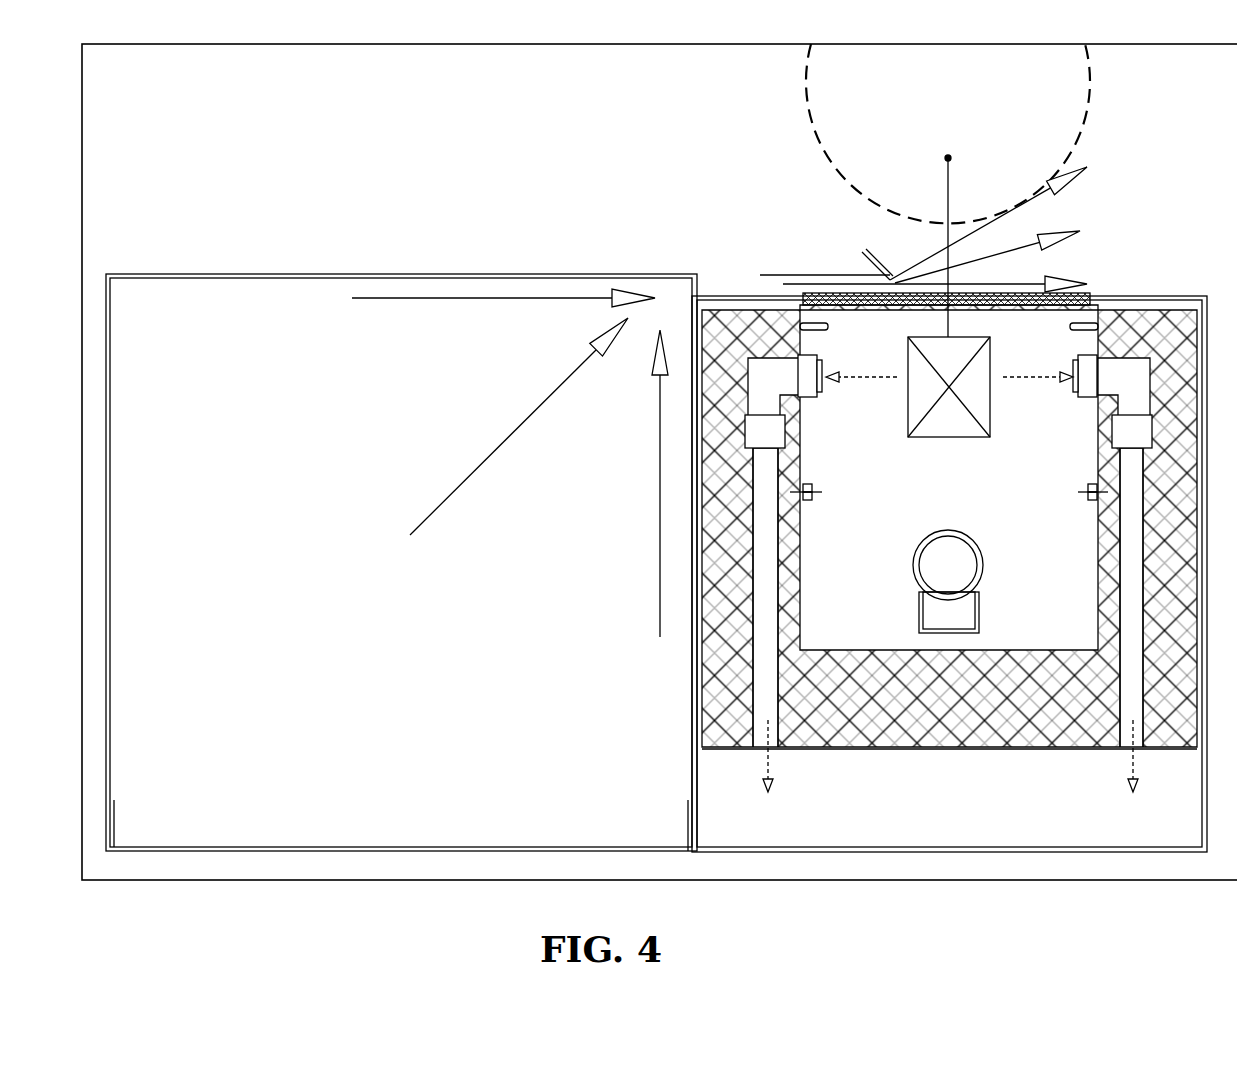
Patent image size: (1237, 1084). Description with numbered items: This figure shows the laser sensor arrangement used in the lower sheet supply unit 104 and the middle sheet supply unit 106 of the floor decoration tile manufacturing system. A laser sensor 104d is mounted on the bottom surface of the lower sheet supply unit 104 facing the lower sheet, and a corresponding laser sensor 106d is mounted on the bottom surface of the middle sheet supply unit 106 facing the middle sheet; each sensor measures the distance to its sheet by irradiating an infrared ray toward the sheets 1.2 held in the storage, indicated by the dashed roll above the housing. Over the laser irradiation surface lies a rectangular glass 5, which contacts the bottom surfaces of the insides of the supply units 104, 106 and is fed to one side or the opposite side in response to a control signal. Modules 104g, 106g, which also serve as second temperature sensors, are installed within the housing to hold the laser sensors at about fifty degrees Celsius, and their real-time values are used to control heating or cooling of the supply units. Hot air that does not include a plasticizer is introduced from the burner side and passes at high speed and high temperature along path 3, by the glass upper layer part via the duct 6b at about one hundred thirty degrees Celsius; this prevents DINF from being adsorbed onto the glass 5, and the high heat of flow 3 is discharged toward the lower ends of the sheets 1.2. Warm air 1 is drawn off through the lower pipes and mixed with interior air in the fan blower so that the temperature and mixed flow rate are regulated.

The lower sheet supply unit 104 is at (873, 472).
The middle sheet supply unit 106 is at (873, 472).
The laser sensor 104d is at (825, 323).
The laser sensor 106d is at (908, 340).
The module (second temperature sensor) 104g is at (825, 590).
The module (second temperature sensor) 106g is at (1088, 493).
The sheets of the storage 1.2 is at (892, 148).
The high-temperature air flow 3 is at (628, 322).
The rectangular glass 5 is at (1092, 298).
The duct (glass upper layer part) 6b is at (116, 845).
The warm air 1 is at (768, 794).